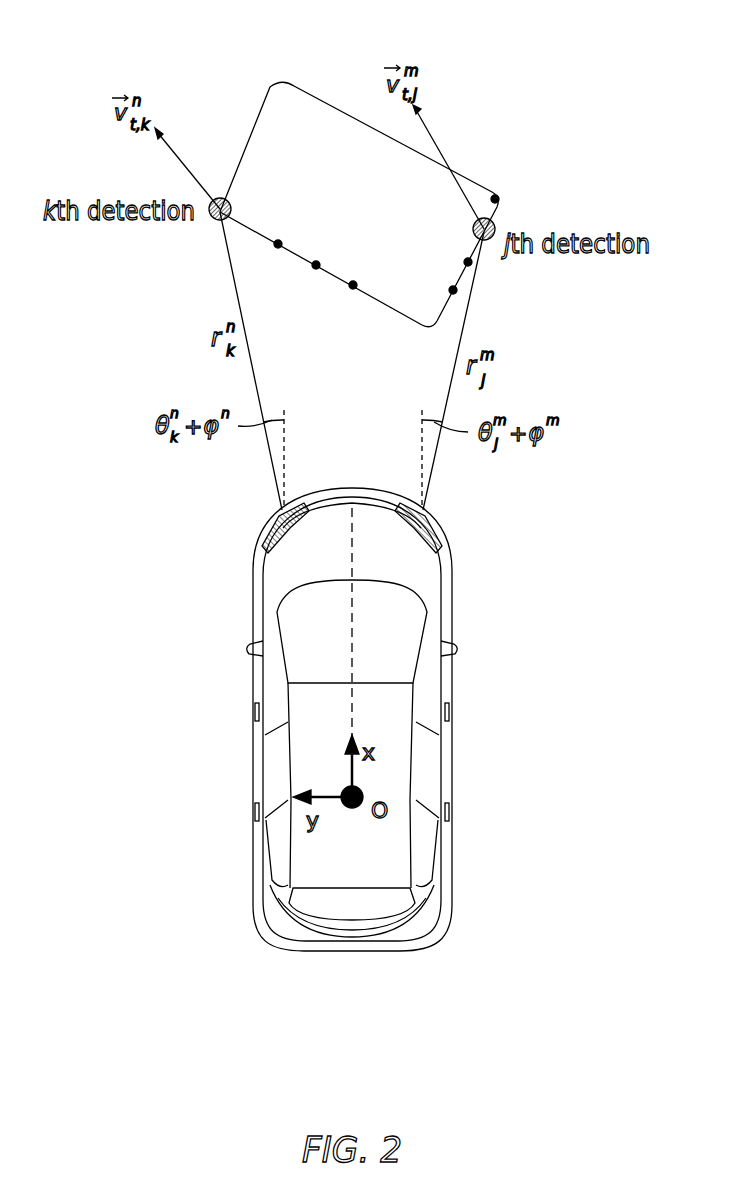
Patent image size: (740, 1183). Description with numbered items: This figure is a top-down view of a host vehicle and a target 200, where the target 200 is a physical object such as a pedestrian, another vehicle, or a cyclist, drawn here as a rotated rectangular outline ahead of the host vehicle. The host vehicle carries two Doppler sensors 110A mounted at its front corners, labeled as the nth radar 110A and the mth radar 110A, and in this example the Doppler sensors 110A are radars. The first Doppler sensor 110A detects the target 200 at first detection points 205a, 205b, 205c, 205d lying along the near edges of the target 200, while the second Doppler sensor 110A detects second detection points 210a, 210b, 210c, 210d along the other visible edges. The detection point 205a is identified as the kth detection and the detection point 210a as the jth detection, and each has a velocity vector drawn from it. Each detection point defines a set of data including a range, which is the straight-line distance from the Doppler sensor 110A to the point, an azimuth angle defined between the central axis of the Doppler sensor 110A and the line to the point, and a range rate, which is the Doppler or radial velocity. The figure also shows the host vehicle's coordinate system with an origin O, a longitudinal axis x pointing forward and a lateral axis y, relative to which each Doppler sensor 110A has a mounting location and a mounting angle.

The target 200 is at (280, 80).
The first detection point 205a is at (212, 220).
The first detection point 205b is at (279, 241).
The first detection point 205c is at (315, 269).
The first detection point 205d is at (353, 281).
The second detection point 210a is at (493, 222).
The second detection point 210b is at (497, 197).
The second detection point 210c is at (472, 265).
The second detection point 210d is at (458, 293).
The Doppler sensor 110A is at (276, 524).